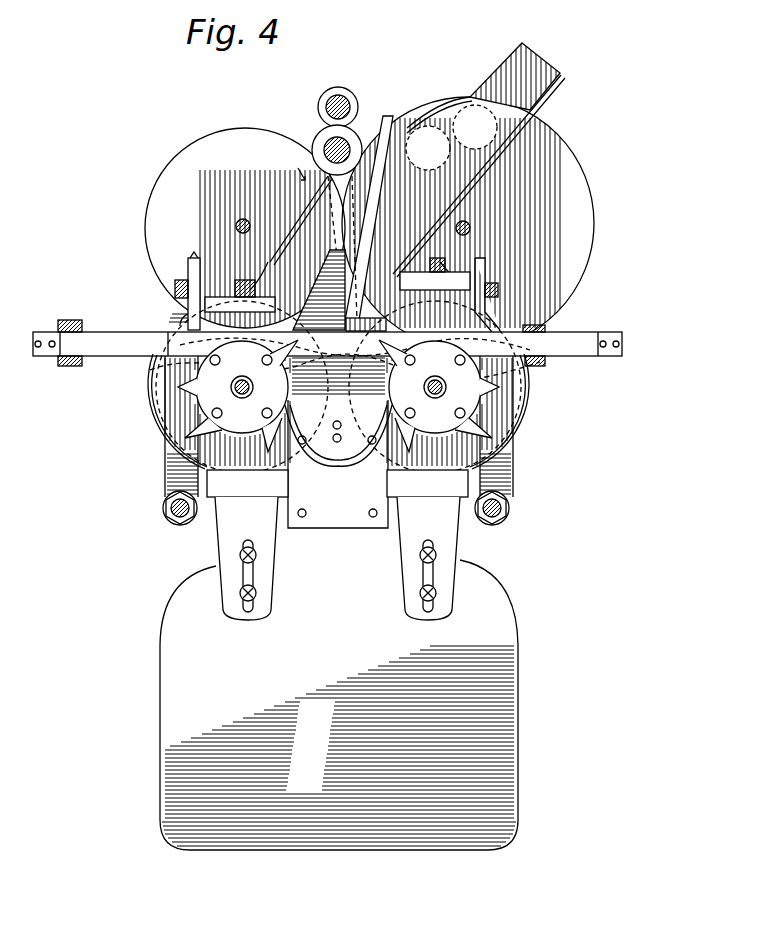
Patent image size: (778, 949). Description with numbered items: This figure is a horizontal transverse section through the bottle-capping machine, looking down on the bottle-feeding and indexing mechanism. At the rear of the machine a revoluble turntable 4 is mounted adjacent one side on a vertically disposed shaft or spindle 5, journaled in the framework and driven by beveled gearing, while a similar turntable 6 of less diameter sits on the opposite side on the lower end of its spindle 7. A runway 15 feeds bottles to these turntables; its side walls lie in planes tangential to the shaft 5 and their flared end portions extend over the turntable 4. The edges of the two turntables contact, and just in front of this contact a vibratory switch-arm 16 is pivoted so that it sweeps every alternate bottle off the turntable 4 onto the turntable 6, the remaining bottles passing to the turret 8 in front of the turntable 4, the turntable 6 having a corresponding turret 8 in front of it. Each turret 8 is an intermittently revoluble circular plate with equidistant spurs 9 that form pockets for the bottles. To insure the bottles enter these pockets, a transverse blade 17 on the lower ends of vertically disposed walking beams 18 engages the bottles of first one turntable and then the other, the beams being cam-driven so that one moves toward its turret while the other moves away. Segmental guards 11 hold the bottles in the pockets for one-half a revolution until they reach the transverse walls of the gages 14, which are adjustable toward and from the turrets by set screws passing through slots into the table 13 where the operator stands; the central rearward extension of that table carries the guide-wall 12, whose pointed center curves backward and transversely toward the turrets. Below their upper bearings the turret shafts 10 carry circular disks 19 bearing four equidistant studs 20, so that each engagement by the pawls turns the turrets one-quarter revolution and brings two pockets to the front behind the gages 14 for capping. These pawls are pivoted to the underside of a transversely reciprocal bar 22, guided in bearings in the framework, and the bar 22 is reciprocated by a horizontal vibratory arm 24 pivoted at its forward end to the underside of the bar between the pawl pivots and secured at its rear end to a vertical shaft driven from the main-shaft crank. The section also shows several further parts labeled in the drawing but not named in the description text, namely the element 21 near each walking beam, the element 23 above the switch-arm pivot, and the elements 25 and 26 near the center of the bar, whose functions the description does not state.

The turntable 4 is at (592, 200).
The shaft or spindle 5 is at (470, 222).
The turntable 6 is at (172, 164).
The spindle 7 is at (241, 218).
The turret 8 is at (197, 417).
The spurs 9 is at (262, 455).
The turret shafts 10 is at (233, 390).
The segmental guards 11 is at (156, 390).
The guide-wall 12 is at (340, 455).
The table 13 is at (339, 705).
The gages 14 is at (230, 527).
The runway 15 is at (540, 50).
The vibratory switch-arm 16 is at (400, 126).
The transverse blade 17 is at (188, 302).
The walking beams 18 is at (237, 282).
The circular disks 19 is at (207, 372).
The studs 20 is at (218, 364).
The spring 21 is at (452, 298).
The transversely reciprocal bar 22 is at (592, 333).
The roller 23 is at (322, 146).
The horizontal vibratory arm 24 is at (363, 240).
The link 25 is at (352, 312).
The stop 26 is at (378, 324).